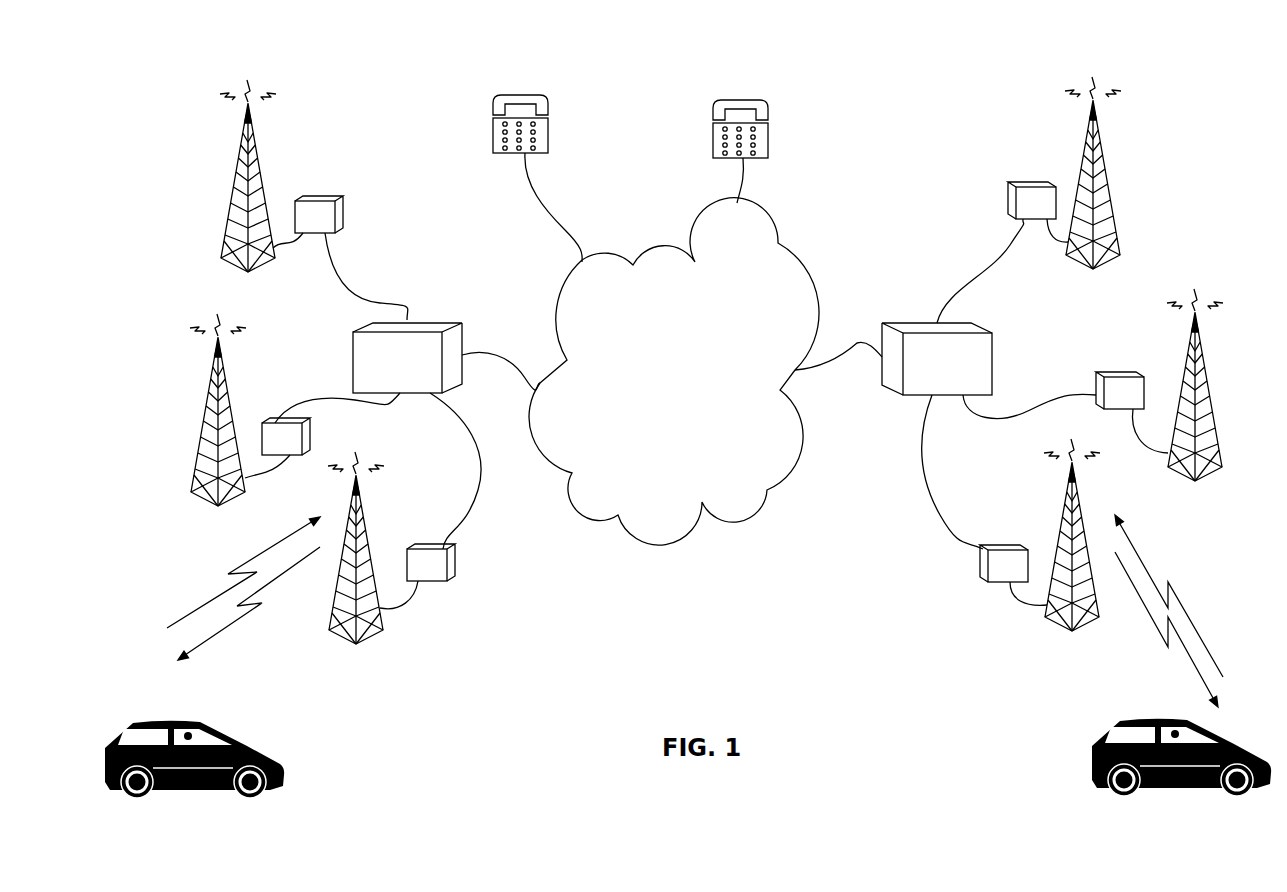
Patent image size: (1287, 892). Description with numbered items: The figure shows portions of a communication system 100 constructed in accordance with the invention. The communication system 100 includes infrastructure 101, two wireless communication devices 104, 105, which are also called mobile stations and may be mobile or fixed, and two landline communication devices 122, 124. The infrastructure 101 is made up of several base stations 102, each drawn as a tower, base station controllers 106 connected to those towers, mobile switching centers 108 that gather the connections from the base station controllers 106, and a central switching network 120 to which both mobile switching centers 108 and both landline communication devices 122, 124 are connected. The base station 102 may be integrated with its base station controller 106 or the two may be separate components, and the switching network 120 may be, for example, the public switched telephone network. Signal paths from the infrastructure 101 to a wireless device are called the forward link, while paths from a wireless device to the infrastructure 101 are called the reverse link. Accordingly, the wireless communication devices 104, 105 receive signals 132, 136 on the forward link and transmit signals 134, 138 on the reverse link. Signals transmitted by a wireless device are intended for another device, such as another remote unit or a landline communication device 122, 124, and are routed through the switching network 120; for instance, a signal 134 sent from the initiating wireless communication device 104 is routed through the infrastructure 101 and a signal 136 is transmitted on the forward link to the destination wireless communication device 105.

The communication system 100 is at (1158, 65).
The infrastructure 101 is at (740, 641).
The base station 102 is at (240, 188).
The wireless communication device 104 is at (268, 773).
The wireless communication device 105 is at (1228, 732).
The base station controller 106 is at (345, 207).
The mobile switching center 108 is at (430, 322).
The switching network 120 is at (782, 247).
The landline communication device 122 is at (757, 100).
The landline communication device 124 is at (533, 100).
The signal 132 is at (262, 585).
The signal 134 is at (282, 540).
The signal 136 is at (1192, 663).
The signal 138 is at (1185, 610).